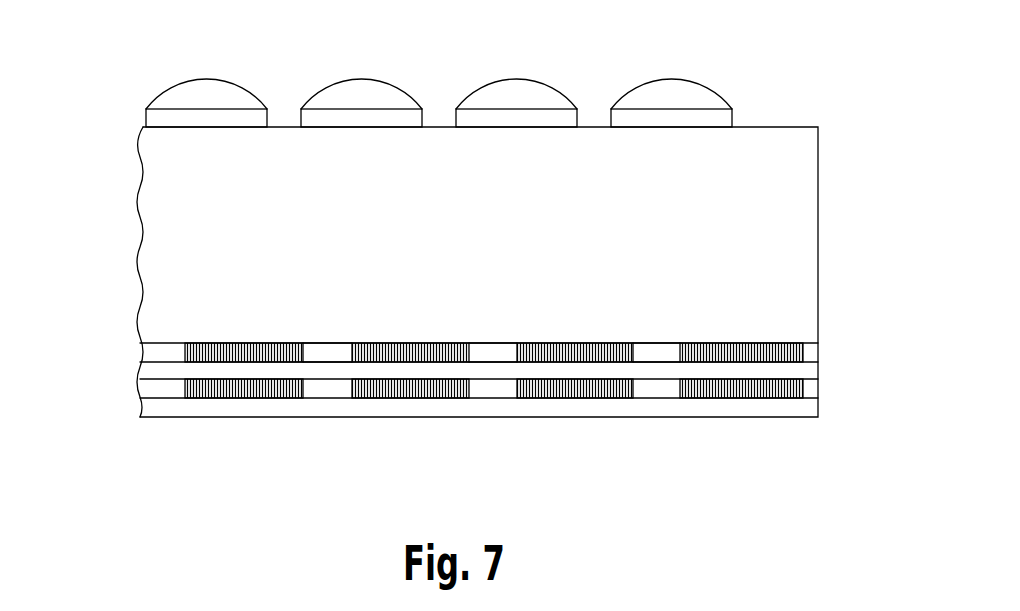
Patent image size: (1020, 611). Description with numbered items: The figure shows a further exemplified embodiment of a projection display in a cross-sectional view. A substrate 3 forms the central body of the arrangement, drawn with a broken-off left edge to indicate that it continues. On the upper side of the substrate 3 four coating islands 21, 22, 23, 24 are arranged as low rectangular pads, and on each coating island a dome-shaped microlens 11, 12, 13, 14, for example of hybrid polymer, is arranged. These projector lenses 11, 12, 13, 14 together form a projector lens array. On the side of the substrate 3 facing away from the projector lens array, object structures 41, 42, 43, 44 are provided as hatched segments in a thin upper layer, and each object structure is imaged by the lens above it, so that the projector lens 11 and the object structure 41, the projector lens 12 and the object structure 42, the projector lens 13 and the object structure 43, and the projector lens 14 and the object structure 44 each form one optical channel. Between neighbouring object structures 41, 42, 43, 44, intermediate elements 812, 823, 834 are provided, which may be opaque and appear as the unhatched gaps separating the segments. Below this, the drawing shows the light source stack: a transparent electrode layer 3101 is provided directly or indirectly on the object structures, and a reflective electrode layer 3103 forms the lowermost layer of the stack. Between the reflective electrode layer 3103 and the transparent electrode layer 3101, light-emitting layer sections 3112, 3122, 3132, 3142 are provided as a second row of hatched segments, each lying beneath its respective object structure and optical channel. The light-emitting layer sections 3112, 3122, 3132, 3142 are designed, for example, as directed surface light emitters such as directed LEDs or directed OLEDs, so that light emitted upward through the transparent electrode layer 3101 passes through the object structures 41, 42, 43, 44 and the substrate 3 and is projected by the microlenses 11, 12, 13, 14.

The substrate 3 is at (795, 178).
The microlens 11 is at (200, 93).
The microlens 12 is at (353, 93).
The microlens 13 is at (506, 93).
The microlens 14 is at (661, 93).
The coating island 21 is at (243, 118).
The coating island 22 is at (395, 118).
The coating island 23 is at (548, 118).
The coating island 24 is at (701, 118).
The object structure 41 is at (203, 351).
The object structure 42 is at (410, 352).
The object structure 43 is at (580, 352).
The object structure 44 is at (773, 349).
The intermediate element 812 is at (325, 355).
The intermediate element 823 is at (495, 355).
The intermediate element 834 is at (660, 355).
The transparent electrode layer 3101 is at (147, 370).
The reflective electrode layer 3103 is at (147, 405).
The light-emitting layer section 3112 is at (240, 390).
The light-emitting layer section 3122 is at (405, 390).
The light-emitting layer section 3132 is at (575, 390).
The light-emitting layer section 3142 is at (740, 390).